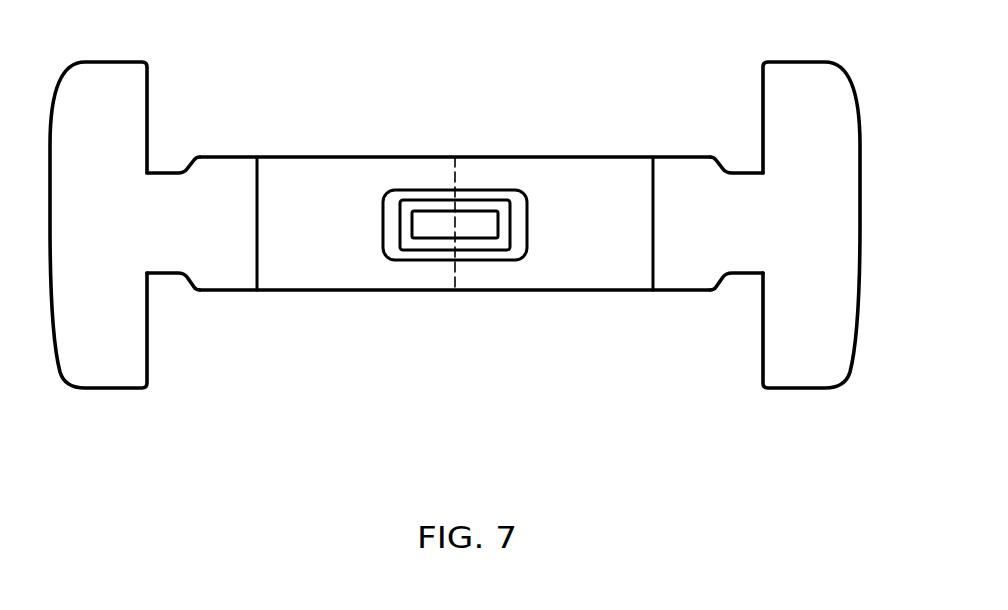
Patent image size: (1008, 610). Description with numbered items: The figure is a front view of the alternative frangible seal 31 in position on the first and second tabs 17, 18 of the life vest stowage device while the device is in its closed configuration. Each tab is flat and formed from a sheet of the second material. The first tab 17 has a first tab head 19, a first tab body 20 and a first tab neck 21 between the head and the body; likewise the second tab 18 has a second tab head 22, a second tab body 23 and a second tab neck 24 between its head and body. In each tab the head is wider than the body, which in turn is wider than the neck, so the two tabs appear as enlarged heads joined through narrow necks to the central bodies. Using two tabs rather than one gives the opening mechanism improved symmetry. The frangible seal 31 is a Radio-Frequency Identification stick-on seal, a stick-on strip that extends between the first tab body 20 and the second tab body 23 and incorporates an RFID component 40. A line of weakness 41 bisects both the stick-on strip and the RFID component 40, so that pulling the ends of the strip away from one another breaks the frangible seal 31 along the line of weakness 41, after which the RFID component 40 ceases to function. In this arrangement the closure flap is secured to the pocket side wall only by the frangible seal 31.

The first tab 17 is at (192, 317).
The second tab 18 is at (687, 328).
The first tab head 19 is at (110, 388).
The first tab body 20 is at (222, 157).
The first tab neck 21 is at (163, 172).
The second tab head 22 is at (833, 388).
The second tab body 23 is at (690, 157).
The second tab neck 24 is at (745, 173).
The frangible seal 31 is at (520, 125).
The RFID component 40 is at (485, 250).
The line of weakness 41 is at (455, 292).